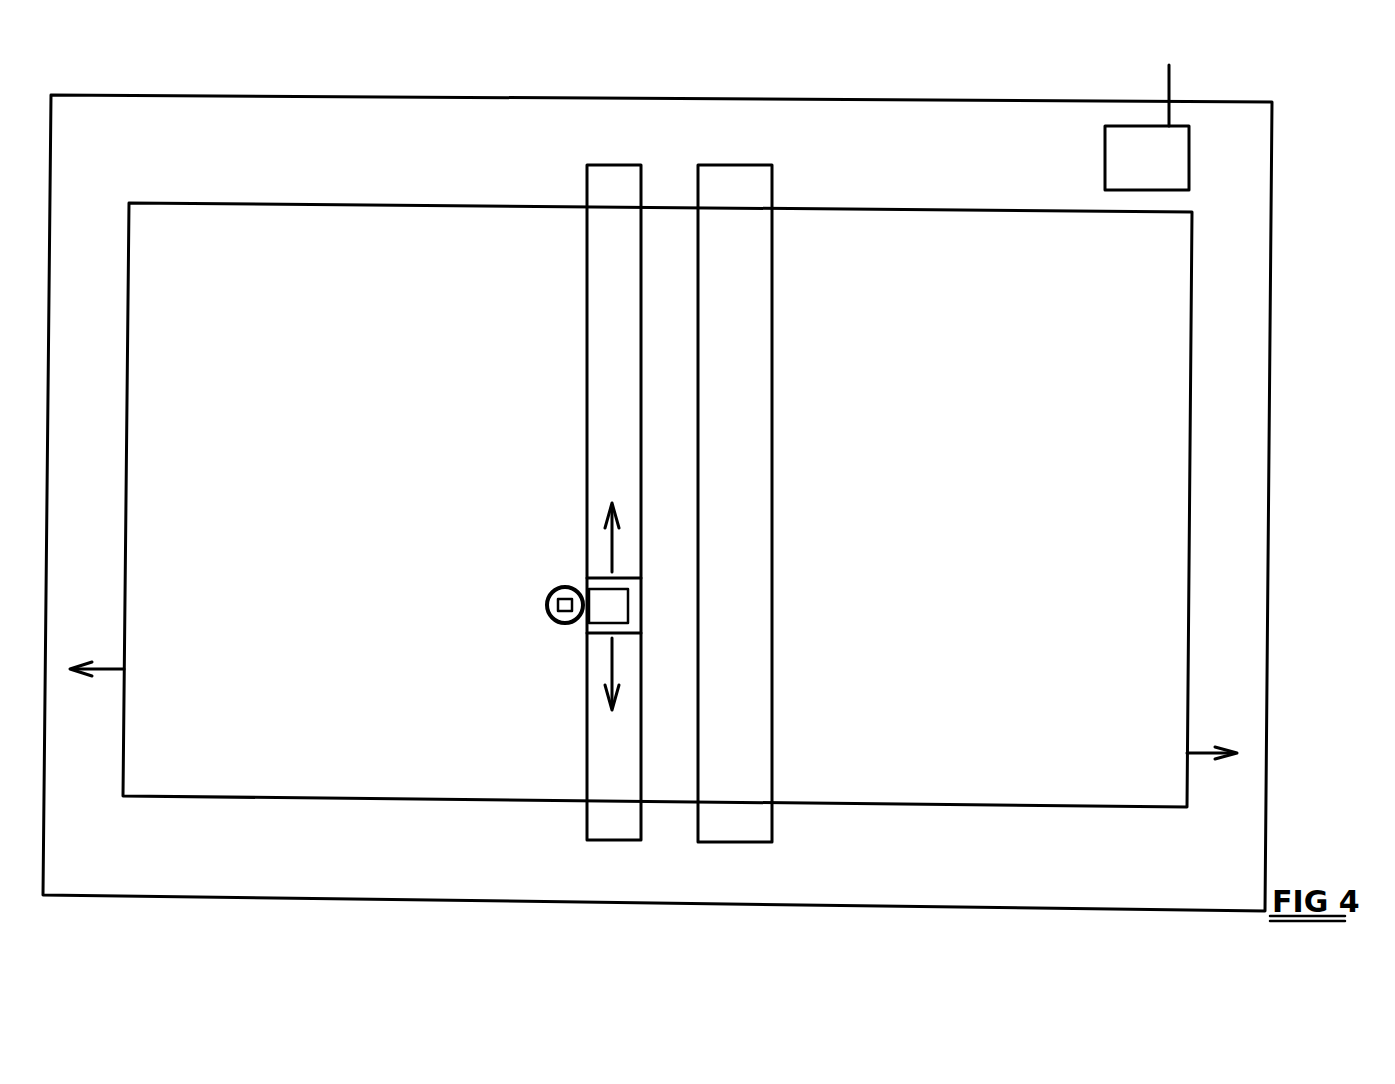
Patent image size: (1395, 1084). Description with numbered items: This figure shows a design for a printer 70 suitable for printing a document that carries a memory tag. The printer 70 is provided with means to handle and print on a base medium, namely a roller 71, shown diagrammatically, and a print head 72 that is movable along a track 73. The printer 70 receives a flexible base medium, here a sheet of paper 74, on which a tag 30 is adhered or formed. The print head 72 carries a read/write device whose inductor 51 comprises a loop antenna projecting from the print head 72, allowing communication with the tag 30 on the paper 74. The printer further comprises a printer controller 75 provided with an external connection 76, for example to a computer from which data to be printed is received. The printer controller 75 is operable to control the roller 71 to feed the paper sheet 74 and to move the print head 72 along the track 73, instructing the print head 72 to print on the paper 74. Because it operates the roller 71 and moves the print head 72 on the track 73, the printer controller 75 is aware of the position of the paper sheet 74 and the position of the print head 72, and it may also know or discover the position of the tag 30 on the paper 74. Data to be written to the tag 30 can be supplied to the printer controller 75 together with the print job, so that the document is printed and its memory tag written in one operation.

The tag 30 is at (563, 587).
The inductor 51 is at (550, 620).
The printer 70 is at (671, 905).
The roller 71 is at (717, 172).
The print head 72 is at (597, 633).
The track 73 is at (612, 172).
The sheet of paper 74 is at (893, 222).
The printer controller 75 is at (1176, 161).
The external connection 76 is at (1172, 92).